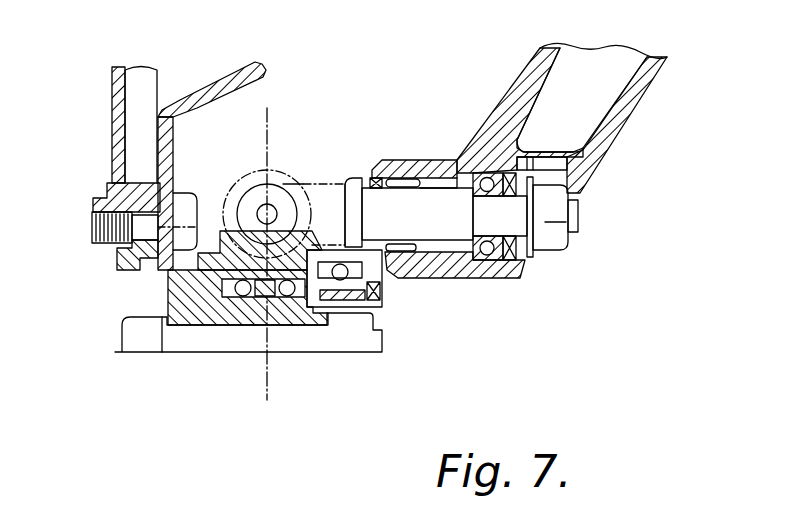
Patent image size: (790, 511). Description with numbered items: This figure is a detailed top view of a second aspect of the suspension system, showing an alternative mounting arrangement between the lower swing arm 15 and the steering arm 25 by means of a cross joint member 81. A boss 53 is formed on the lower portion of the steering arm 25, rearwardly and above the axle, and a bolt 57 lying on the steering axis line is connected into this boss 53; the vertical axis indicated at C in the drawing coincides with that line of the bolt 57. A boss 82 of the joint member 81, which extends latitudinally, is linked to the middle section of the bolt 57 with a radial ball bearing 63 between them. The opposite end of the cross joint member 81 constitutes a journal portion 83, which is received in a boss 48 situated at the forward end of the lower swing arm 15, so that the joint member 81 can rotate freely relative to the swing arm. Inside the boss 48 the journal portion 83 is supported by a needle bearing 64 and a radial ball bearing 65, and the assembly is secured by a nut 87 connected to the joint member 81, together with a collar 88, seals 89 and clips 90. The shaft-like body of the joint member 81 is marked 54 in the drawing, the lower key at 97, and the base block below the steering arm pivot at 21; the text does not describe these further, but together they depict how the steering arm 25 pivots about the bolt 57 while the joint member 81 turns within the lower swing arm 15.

The lower swing arm 15 is at (648, 102).
The base block 21 is at (168, 303).
The steering arm 25 is at (213, 238).
The boss 48 is at (452, 279).
The boss 53 is at (317, 247).
The shaft 54 is at (460, 219).
The bolt 57 is at (278, 206).
The radial ball bearing 63 is at (257, 184).
The needle bearing 64 is at (397, 178).
The radial ball bearing 65 is at (503, 147).
The cross joint member 81 is at (437, 180).
The boss 82 is at (252, 180).
The journal portion 83 is at (472, 262).
The nut 87 is at (550, 214).
The collar 88 is at (528, 255).
The seals 89 is at (370, 182).
The clips 90 is at (371, 177).
The lower key 97 is at (386, 248).
The axis C is at (270, 150).